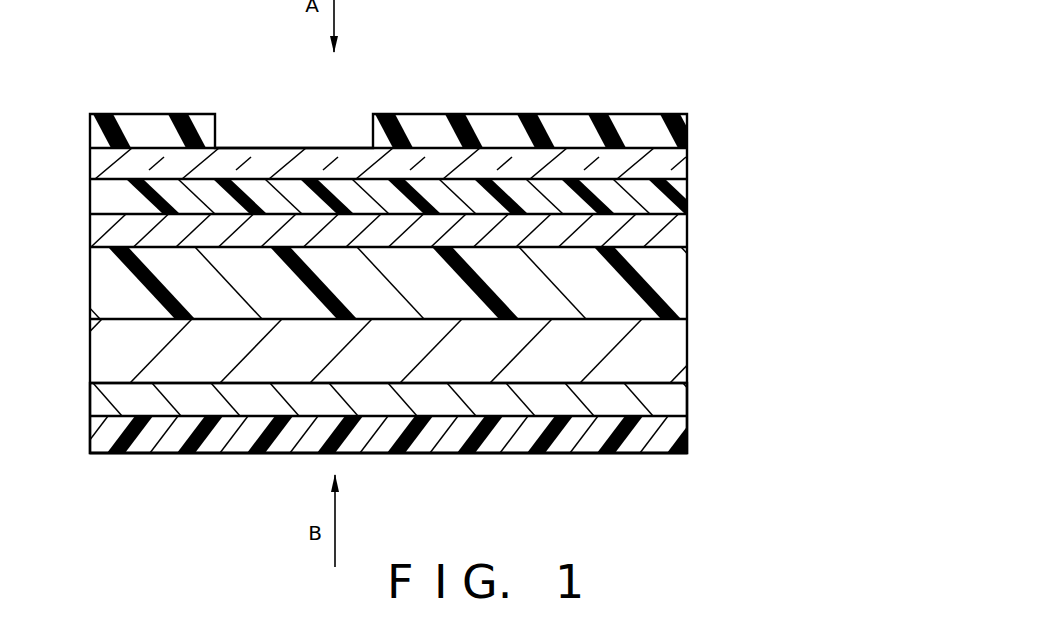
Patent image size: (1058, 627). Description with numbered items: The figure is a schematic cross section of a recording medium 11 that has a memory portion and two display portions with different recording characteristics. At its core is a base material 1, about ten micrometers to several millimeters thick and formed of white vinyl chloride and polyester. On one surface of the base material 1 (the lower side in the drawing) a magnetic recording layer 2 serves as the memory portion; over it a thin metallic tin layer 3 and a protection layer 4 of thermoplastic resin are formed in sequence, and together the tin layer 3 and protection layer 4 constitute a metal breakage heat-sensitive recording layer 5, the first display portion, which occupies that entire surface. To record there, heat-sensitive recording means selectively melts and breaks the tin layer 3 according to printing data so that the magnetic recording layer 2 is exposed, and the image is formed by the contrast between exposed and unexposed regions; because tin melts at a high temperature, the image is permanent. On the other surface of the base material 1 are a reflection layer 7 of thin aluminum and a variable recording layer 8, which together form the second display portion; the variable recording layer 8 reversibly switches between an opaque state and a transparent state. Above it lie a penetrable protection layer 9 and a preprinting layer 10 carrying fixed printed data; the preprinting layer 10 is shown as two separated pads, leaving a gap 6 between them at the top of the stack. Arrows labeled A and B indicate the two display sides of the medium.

The base material 1 is at (675, 303).
The magnetic recording layer 2 is at (675, 368).
The tin layer 3 is at (98, 403).
The protection layer 4 is at (98, 428).
The metal breakage heat-sensitive recording layer 5 is at (57, 392).
The recess between electrodes 6 is at (285, 130).
The reflection layer 7 is at (675, 236).
The variable recording layer 8 is at (662, 202).
The protection layer 9 is at (673, 163).
The preprinting layer 10 is at (138, 131).
The recording medium 11 is at (643, 100).